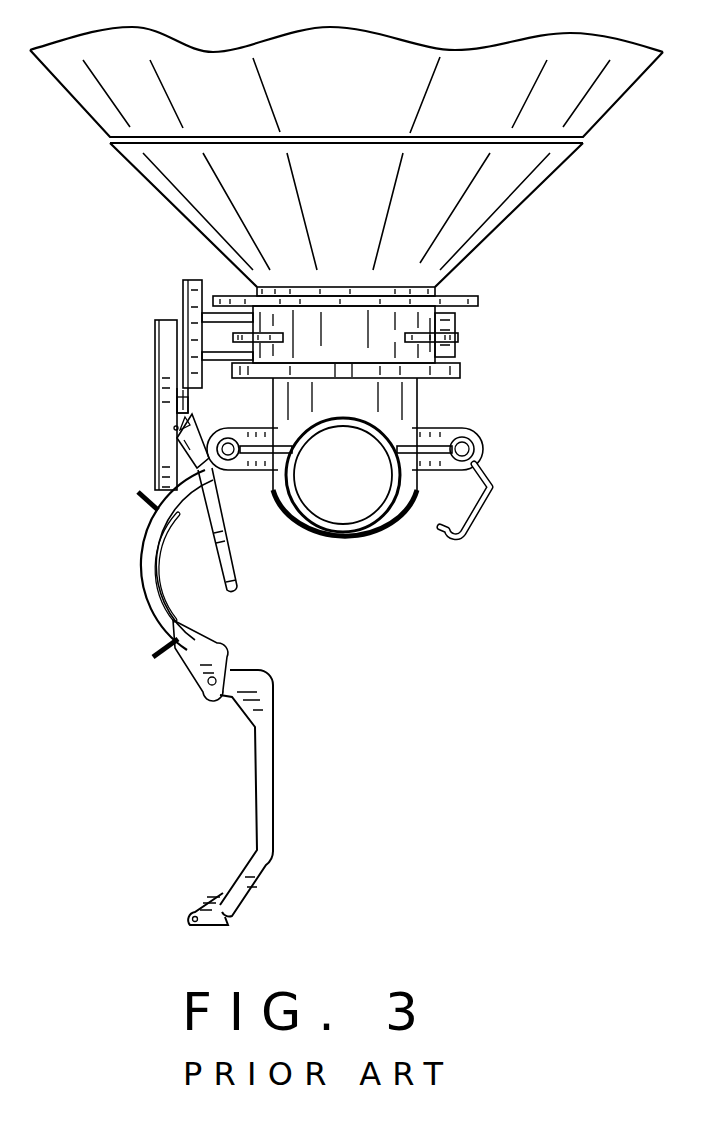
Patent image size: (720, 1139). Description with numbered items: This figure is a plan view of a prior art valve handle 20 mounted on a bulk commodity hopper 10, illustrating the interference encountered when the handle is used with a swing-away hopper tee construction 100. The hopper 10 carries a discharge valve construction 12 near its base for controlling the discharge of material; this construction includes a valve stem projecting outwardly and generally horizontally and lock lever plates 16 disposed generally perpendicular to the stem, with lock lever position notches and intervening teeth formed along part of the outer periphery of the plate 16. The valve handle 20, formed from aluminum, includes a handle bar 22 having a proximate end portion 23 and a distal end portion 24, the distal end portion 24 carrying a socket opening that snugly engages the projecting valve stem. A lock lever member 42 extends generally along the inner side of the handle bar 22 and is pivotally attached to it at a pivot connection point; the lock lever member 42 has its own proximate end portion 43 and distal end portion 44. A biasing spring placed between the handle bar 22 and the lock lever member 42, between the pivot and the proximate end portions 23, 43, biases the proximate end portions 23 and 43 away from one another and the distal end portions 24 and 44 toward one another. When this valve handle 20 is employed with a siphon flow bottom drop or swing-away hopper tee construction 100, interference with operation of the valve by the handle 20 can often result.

The bulk commodity hopper 10 is at (480, 210).
The discharge valve construction 12 is at (480, 298).
The lock lever plates 16 is at (183, 303).
The valve handle 20 is at (259, 421).
The handle bar 22 is at (173, 429).
The proximate end portion 23 is at (178, 573).
The distal end portion 24 is at (155, 352).
The lock lever member 42 is at (222, 532).
The proximate end portion 43 is at (235, 572).
The distal end portion 44 is at (197, 424).
The swing-away hopper tee construction 100 is at (153, 617).